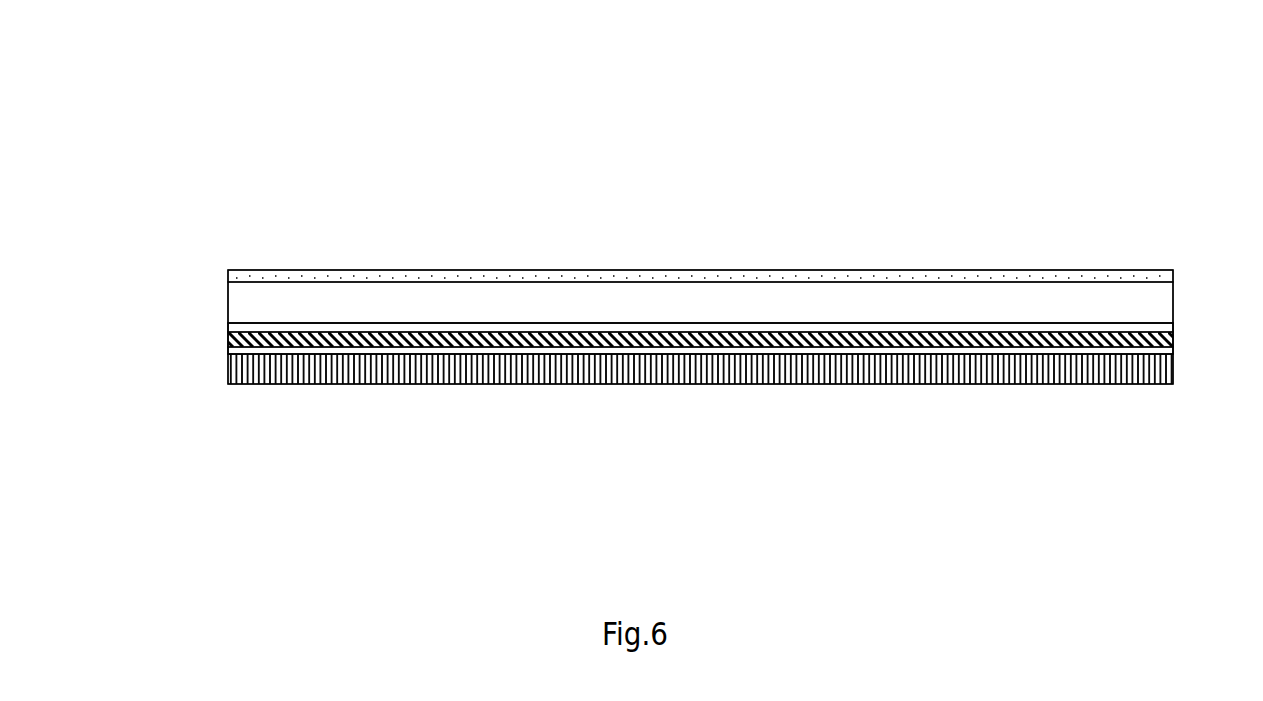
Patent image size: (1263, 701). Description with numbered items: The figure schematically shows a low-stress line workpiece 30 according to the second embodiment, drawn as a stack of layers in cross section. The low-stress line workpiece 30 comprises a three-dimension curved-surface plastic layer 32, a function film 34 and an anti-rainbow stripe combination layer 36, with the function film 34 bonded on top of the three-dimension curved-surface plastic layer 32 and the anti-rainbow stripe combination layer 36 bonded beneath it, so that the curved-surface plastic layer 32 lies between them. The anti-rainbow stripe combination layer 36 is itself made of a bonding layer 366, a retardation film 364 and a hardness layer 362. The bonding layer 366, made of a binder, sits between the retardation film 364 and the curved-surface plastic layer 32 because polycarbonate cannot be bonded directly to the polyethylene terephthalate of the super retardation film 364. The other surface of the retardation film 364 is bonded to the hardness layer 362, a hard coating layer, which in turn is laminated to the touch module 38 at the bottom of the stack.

The low-stress line workpiece 30 is at (990, 115).
The 3D curved-surface plastic layer 32 is at (228, 307).
The function film 34 is at (1173, 275).
The anti-rainbow stripe combination layer 36 is at (651, 346).
The hardness layer 362 is at (228, 353).
The retardation film 364 is at (228, 339).
The bonding layer 366 is at (228, 325).
The touch module 38 is at (407, 385).